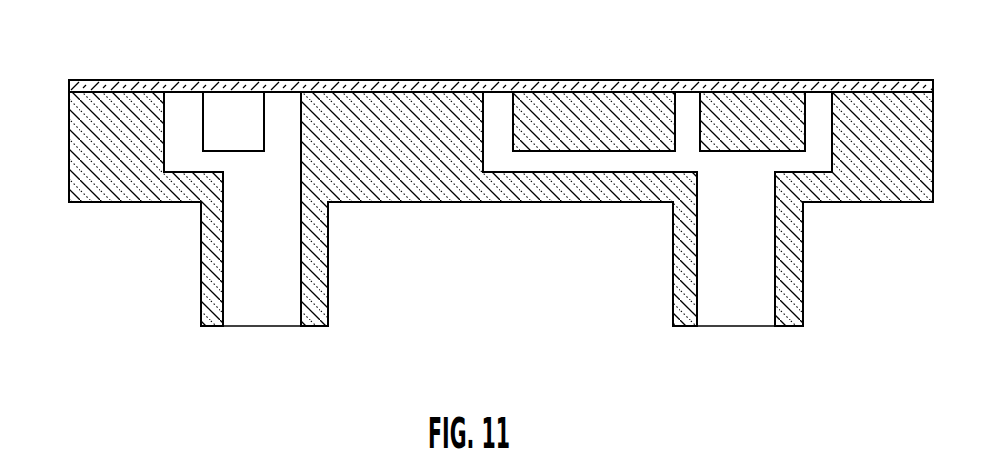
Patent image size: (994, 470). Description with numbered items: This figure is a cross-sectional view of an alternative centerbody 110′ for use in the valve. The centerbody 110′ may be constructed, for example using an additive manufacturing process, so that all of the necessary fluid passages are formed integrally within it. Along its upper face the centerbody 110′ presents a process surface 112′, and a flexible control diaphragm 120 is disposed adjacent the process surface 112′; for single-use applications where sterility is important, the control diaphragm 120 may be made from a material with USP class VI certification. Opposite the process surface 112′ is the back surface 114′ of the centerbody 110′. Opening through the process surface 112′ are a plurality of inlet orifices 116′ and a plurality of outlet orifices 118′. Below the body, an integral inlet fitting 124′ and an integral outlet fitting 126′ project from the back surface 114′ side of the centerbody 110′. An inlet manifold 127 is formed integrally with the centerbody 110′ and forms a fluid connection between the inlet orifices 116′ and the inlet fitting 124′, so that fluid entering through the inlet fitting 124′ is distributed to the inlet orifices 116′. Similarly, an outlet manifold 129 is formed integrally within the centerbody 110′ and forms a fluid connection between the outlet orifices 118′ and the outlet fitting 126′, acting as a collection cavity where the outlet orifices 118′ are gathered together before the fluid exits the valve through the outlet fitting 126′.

The centerbody 110′ is at (69, 162).
The process surface 112′ is at (346, 83).
The back surface 114′ is at (398, 203).
The inlet orifices 116′ is at (167, 111).
The outlet orifices 118′ is at (485, 103).
The control diaphragm 120 is at (104, 80).
The inlet fitting 124′ is at (203, 268).
The outlet fitting 126′ is at (793, 250).
The inlet manifold 127 is at (208, 158).
The outlet manifold 129 is at (684, 165).